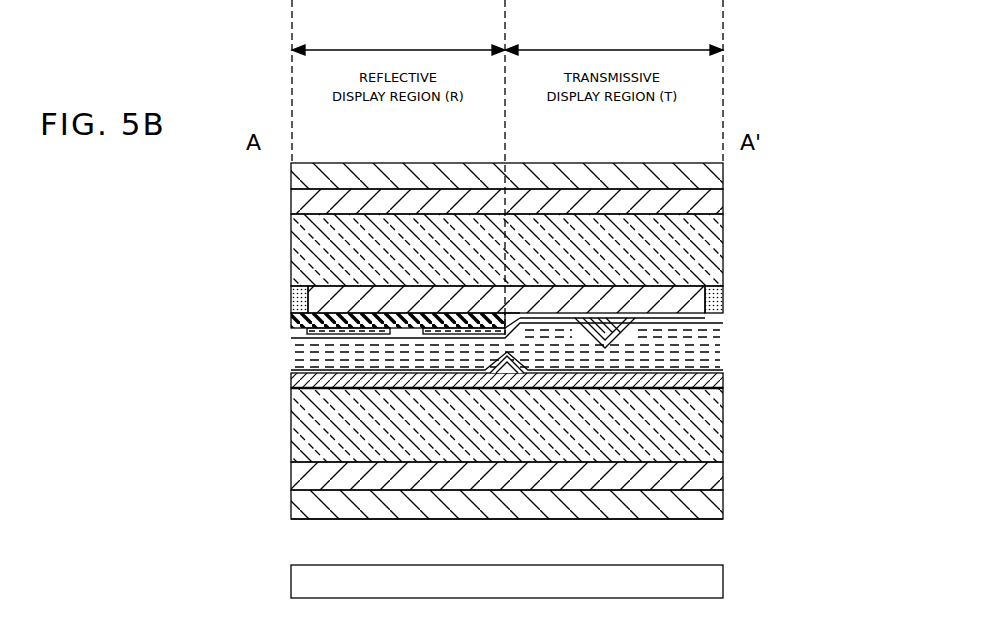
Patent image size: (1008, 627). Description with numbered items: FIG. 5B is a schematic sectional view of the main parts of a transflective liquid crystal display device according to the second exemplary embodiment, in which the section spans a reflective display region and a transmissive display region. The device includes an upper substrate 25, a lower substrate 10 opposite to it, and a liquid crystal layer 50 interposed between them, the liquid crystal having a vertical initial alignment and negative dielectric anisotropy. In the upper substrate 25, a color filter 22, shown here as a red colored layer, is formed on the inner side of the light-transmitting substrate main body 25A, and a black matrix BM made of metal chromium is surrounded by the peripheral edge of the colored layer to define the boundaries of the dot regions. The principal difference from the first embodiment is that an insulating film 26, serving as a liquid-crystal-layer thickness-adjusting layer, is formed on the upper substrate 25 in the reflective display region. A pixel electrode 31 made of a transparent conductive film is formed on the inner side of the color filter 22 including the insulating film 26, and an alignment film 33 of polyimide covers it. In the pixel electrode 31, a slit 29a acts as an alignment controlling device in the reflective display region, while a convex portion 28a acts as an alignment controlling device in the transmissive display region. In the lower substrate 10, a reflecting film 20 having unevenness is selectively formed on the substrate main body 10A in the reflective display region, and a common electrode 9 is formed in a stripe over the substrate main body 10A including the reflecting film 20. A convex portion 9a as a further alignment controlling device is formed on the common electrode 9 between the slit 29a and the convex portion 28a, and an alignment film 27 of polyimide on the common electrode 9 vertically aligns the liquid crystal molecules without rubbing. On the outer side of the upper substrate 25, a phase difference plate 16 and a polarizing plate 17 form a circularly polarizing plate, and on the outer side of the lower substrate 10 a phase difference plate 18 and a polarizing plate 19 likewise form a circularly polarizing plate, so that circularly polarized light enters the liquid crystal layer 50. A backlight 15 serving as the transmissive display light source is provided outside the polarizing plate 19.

The convex portion 9a is at (540, 0).
The slit 29a is at (405, 328).
The convex portion 28a is at (593, 315).
The polarizing plate 17 is at (723, 170).
The phase difference plate 16 is at (723, 200).
The substrate main body 25A is at (723, 240).
The color filter 22 is at (723, 267).
The black matrix BM is at (292, 296).
The insulating film 26 is at (292, 325).
The pixel electrode 31 is at (723, 318).
The alignment film 33 is at (723, 323).
The liquid crystal layer 50 is at (723, 338).
The alignment film 27 is at (723, 372).
The reflecting film 20 is at (291, 387).
The common electrode 9 is at (723, 392).
The substrate main body 10A is at (723, 450).
The phase difference plate 18 is at (723, 483).
The polarizing plate 19 is at (712, 516).
The backlight 15 is at (708, 580).
The upper substrate 25 is at (203, 327).
The lower substrate 10 is at (202, 520).